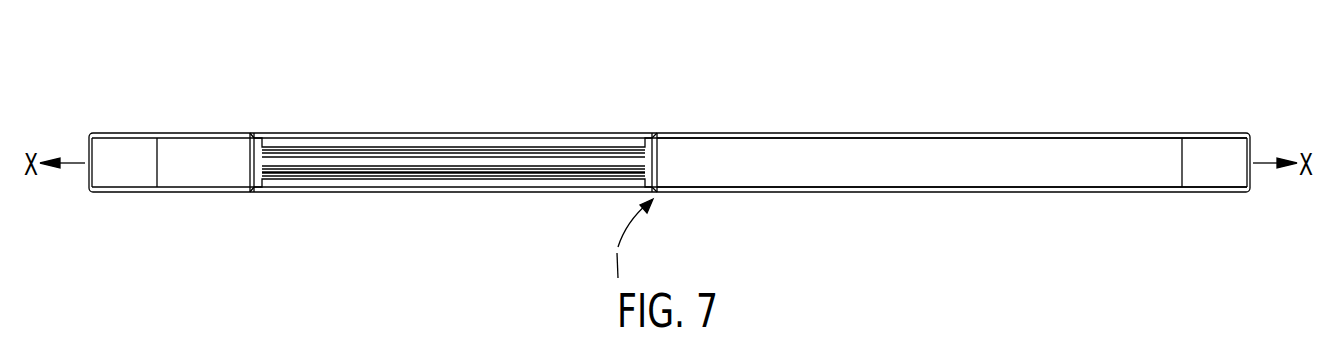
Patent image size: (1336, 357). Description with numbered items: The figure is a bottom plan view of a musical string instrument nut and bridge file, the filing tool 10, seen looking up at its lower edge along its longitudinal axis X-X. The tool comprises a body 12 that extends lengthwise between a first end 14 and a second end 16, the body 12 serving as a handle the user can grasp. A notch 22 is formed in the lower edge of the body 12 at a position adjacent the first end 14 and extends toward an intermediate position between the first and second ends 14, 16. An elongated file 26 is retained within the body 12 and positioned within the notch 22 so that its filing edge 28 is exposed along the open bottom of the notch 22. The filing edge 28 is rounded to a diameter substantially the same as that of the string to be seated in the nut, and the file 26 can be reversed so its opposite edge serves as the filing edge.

The filing tool 10 is at (1023, 93).
The body 12 is at (1078, 160).
The first end 14 is at (85, 179).
The second end 16 is at (1252, 180).
The notch 22 is at (641, 131).
The elongated file 26 is at (335, 182).
The filing edge 28 is at (388, 160).